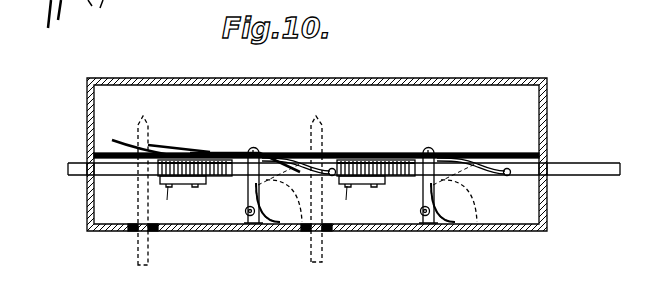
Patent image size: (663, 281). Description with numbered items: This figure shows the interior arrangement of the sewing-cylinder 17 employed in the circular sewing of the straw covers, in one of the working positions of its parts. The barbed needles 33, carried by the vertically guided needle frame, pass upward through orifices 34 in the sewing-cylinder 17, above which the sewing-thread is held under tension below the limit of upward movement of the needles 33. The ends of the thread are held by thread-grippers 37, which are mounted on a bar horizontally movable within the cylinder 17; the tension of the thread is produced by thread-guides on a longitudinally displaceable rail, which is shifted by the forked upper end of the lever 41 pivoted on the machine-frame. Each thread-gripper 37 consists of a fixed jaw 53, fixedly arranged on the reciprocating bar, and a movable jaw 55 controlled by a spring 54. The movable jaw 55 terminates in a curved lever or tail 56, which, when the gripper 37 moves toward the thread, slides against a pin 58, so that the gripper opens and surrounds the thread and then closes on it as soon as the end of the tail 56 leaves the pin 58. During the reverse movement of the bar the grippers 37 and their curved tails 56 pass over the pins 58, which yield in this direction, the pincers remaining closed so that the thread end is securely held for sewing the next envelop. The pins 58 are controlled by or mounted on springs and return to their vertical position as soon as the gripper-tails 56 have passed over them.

The sewing-cylinder 17 is at (494, 78).
The barbed needles 33 is at (140, 124).
The orifices 34 is at (133, 232).
The thread-grippers 37 is at (252, 150).
The lever 41 is at (556, 166).
The fixed jaws 53 is at (176, 160).
The springs 54 is at (309, 152).
The movable jaws 55 is at (220, 162).
The curved lever or tail 56 is at (285, 158).
The pin 58 is at (258, 185).